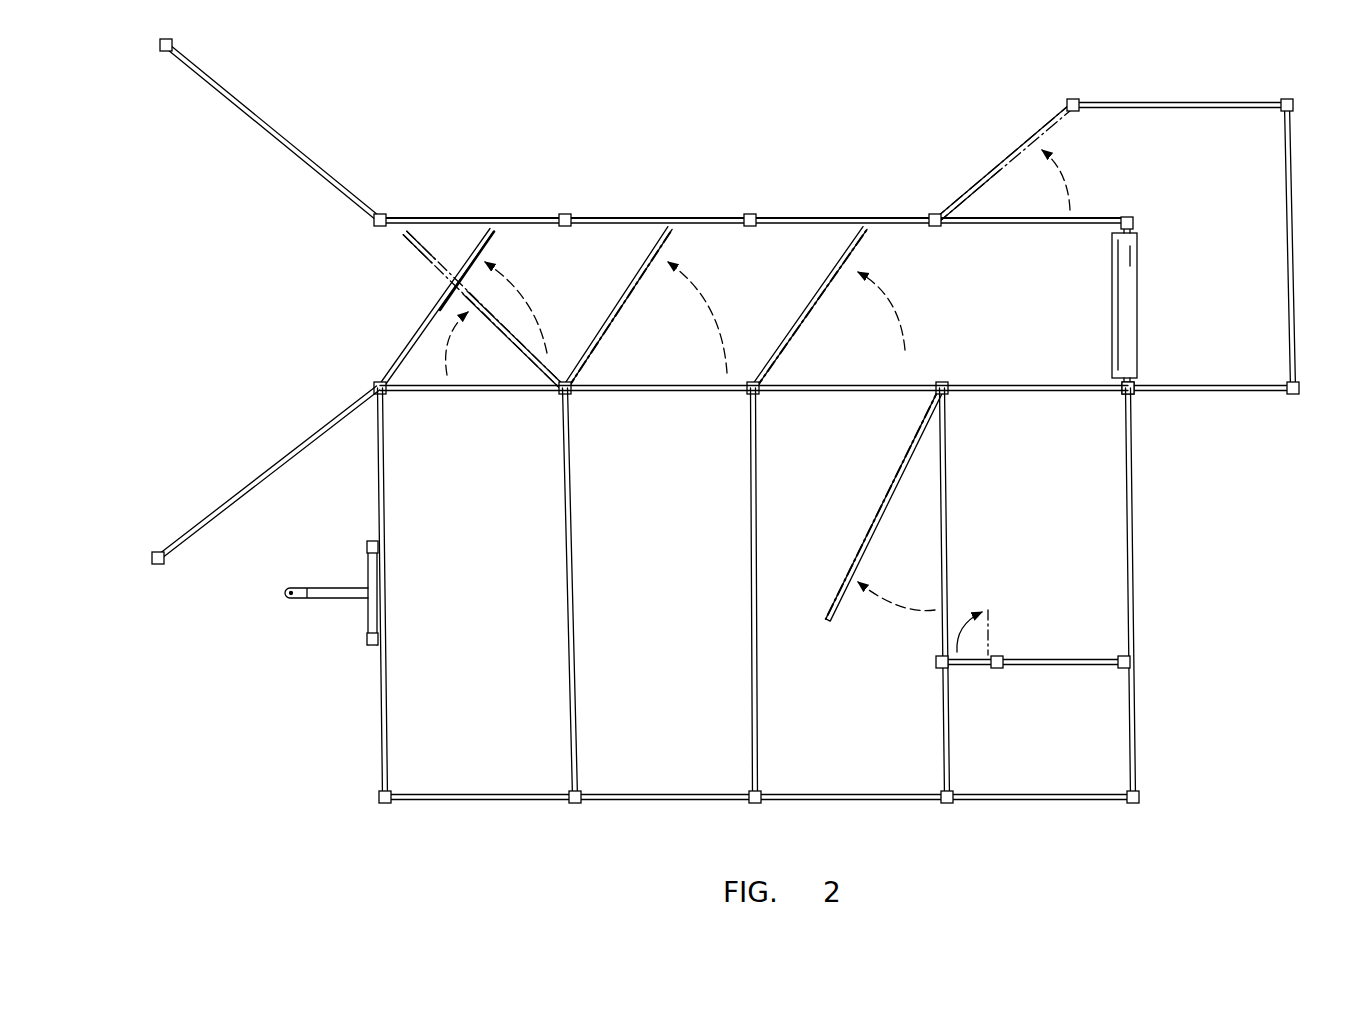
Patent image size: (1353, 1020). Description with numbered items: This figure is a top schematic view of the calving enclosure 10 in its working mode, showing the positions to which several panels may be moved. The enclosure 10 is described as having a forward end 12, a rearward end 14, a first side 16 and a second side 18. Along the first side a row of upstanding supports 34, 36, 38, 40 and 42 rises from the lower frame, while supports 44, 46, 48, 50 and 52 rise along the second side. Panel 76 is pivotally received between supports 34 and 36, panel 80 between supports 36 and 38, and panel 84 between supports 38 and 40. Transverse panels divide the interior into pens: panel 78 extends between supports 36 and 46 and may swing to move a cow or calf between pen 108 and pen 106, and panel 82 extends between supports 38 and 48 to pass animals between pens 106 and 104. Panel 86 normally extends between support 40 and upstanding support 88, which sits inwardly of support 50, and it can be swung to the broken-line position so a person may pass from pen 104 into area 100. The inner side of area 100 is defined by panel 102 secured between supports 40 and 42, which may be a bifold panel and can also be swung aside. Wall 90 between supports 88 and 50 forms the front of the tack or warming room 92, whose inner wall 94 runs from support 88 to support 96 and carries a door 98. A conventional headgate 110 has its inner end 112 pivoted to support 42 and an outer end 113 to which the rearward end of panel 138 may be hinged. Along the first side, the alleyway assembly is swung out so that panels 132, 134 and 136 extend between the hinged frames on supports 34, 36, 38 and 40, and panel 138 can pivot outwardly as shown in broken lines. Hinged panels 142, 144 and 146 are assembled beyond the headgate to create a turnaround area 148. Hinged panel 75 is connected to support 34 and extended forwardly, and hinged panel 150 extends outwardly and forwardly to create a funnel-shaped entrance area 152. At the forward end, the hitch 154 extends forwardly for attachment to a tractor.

The calving enclosure 10 is at (360, 763).
The forward end 12 is at (320, 683).
The rearward end 14 is at (1157, 570).
The first side 16 is at (732, 155).
The second side 18 is at (652, 850).
The first support 34 is at (390, 395).
The first support 36 is at (580, 395).
The first support 38 is at (765, 397).
The first support 40 is at (950, 397).
The first support 42 is at (1135, 397).
The upstanding support 44 is at (388, 802).
The upstanding support 46 is at (575, 802).
The upstanding support 48 is at (753, 802).
The upstanding support 50 is at (950, 802).
The upstanding support 52 is at (1136, 802).
The panel 75 is at (246, 487).
The panel 76 is at (455, 395).
The panel 78 is at (572, 612).
The panel 80 is at (635, 397).
The panel 82 is at (752, 632).
The panel 84 is at (820, 397).
The panel 86 is at (946, 545).
The upstanding support 88 is at (938, 660).
The wall 90 is at (943, 700).
The tack room 92 is at (1056, 762).
The inner wall 94 is at (1073, 655).
The support 96 is at (1132, 660).
The door 98 is at (973, 668).
The area 100 is at (1079, 560).
The panel 102 is at (1052, 397).
The pen 104 is at (821, 747).
The pen 106 is at (661, 715).
The pen 108 is at (486, 720).
The headgate assembly 110 is at (1140, 308).
The inner end 112 is at (1136, 383).
The outer end 113 is at (1134, 226).
The panel 132 is at (455, 214).
The panel 134 is at (613, 214).
The panel 136 is at (793, 214).
The panel 138 is at (1003, 232).
The hinged panel 142 is at (1195, 102).
The hinged panel 144 is at (1286, 185).
The hinged panel 146 is at (1245, 395).
The turnaround area 148 is at (1226, 270).
The hinged panel 150 is at (290, 137).
The funnel-shaped entrance area 152 is at (244, 316).
The hitch 154 is at (330, 582).